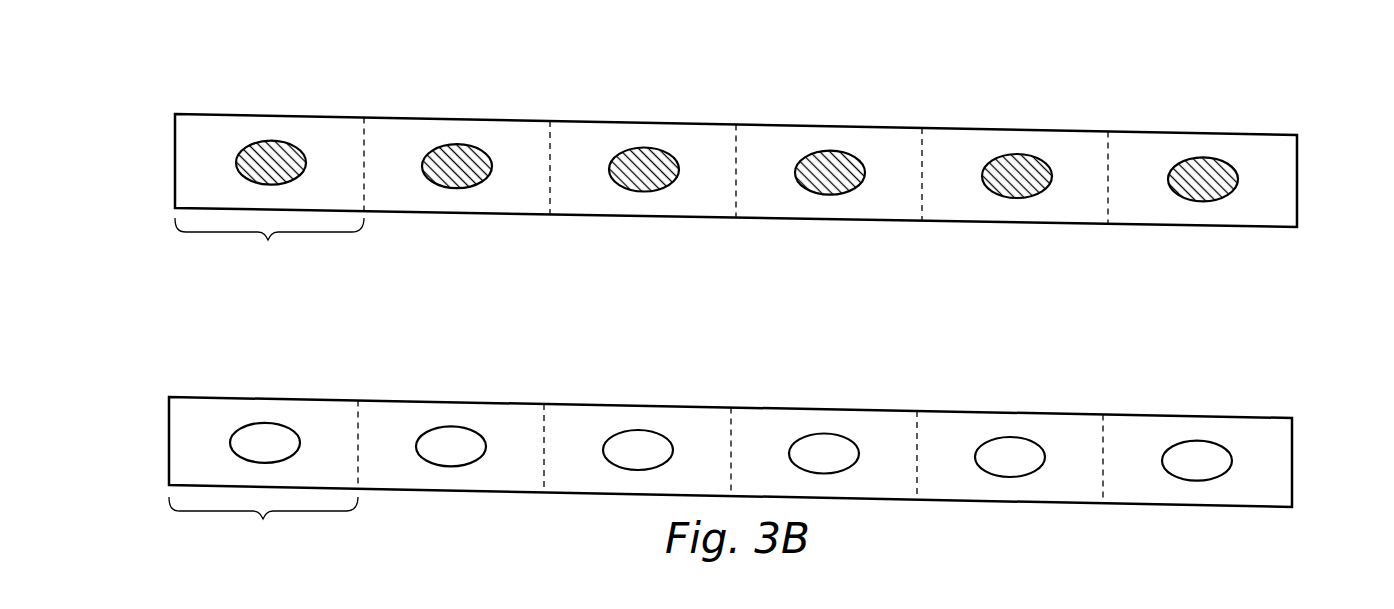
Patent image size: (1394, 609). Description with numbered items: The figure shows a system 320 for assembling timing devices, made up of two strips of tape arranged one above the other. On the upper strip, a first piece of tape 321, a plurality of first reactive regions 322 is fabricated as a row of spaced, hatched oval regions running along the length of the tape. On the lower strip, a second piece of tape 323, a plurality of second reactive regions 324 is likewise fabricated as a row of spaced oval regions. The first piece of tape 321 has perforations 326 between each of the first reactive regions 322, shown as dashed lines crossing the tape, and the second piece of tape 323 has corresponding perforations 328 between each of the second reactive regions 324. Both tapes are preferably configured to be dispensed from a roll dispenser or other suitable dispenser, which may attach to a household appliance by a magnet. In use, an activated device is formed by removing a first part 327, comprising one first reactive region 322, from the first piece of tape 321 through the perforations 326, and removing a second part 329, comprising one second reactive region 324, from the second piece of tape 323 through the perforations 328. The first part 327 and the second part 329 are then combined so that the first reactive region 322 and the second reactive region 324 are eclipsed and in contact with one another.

The system 320 is at (156, 77).
The first piece of tape 321 is at (1297, 180).
The first reactive regions 322 is at (271, 141).
The second piece of tape 323 is at (1292, 463).
The second reactive regions 324 is at (265, 423).
The perforations 326 is at (364, 118).
The first part 327 is at (269, 247).
The perforations 328 is at (358, 400).
The second part 329 is at (263, 527).